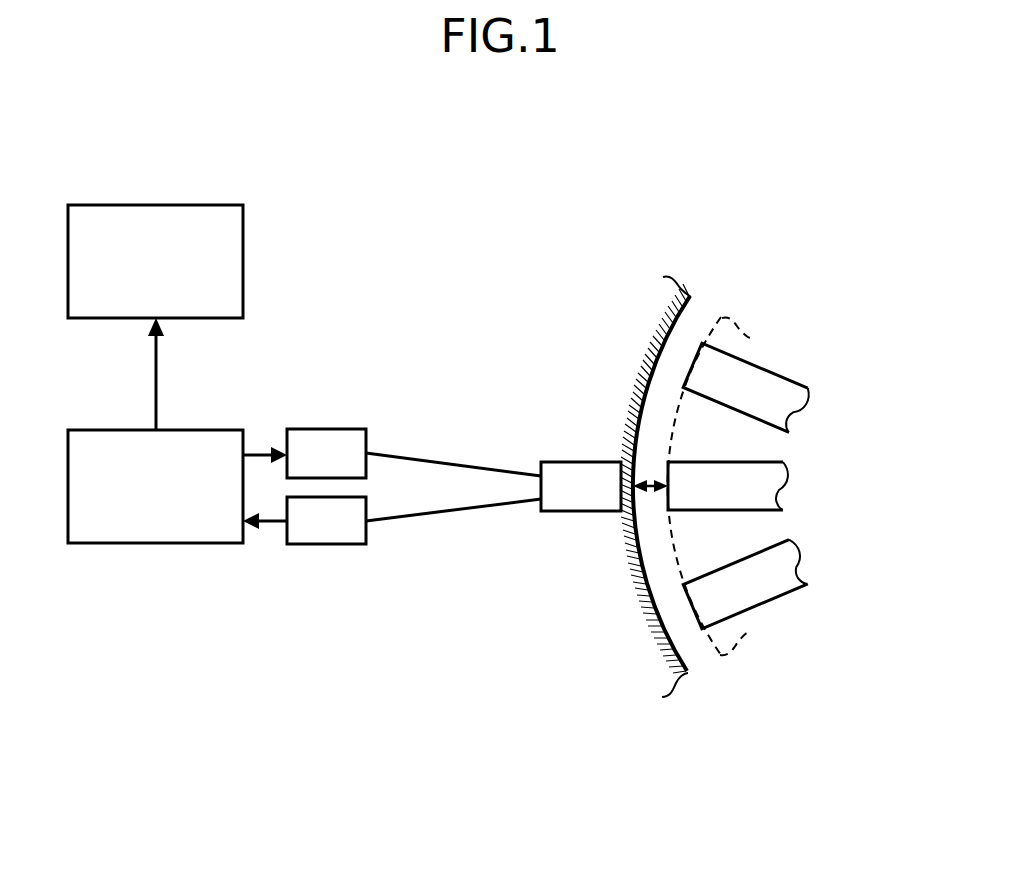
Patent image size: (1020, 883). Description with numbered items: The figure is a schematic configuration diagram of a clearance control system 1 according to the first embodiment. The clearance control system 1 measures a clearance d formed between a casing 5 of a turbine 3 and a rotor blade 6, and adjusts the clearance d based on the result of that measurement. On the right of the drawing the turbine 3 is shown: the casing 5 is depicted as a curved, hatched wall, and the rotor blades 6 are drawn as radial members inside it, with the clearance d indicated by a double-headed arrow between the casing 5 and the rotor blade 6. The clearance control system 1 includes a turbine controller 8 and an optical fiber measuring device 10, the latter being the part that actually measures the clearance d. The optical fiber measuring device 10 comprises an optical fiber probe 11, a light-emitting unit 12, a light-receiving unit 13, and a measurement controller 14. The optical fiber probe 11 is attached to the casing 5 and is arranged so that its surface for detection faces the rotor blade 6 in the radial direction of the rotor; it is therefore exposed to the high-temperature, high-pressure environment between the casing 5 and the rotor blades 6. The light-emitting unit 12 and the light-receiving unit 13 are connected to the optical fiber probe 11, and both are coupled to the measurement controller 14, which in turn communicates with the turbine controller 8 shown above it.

The clearance control system 1 is at (601, 195).
The turbine 3 is at (759, 281).
The casing 5 is at (678, 647).
The rotor blade 6 is at (745, 512).
The turbine controller 8 is at (153, 203).
The optical fiber measuring device 10 is at (351, 337).
The optical fiber probe 11 is at (582, 512).
The light-emitting unit 12 is at (322, 428).
The light-receiving unit 13 is at (323, 545).
The measurement controller 14 is at (156, 545).
The clearance d is at (653, 482).